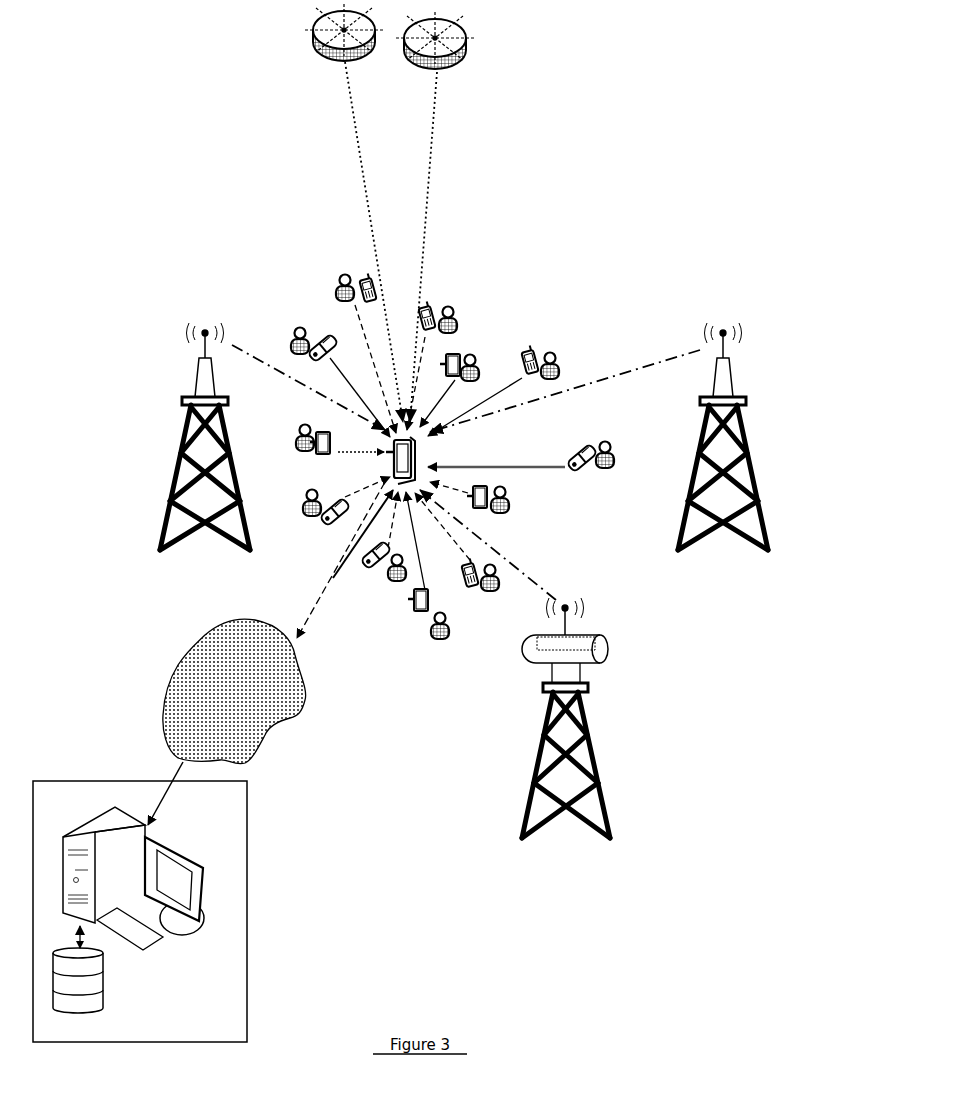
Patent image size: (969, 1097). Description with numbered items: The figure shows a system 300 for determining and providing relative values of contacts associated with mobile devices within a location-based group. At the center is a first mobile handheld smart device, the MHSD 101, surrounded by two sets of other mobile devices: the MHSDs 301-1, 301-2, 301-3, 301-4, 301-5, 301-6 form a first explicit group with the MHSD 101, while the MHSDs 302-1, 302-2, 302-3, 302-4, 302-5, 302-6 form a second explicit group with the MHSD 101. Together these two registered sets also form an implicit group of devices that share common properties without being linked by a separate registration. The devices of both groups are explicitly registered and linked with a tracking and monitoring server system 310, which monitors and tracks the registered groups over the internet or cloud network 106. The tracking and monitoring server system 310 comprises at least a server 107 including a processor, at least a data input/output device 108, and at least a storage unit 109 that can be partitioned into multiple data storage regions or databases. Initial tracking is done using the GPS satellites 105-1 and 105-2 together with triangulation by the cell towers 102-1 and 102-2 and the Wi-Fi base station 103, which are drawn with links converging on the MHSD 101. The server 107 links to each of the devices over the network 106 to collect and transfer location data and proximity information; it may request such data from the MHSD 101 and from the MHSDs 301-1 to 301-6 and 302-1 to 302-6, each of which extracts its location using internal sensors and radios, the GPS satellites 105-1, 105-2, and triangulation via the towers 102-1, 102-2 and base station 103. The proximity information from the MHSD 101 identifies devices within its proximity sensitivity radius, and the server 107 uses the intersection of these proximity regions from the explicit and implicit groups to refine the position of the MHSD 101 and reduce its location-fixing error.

The system 300 is at (652, 122).
The MHSD 101 is at (418, 460).
The cell tower 102-1 is at (728, 356).
The cell tower 102-2 is at (200, 356).
The Wi-Fi base station 103 is at (600, 665).
The GPS satellite 105-1 is at (332, 63).
The GPS satellite 105-2 is at (451, 68).
The network 106 is at (280, 730).
The server 107 is at (83, 836).
The data input/output device 108 is at (192, 897).
The storage unit 109 is at (103, 1006).
The tracking and monitoring server system 310 is at (248, 960).
The MHSD 301-1 is at (293, 333).
The MHSD 301-2 is at (466, 352).
The MHSD 301-3 is at (567, 352).
The MHSD 301-4 is at (604, 470).
The MHSD 301-5 is at (446, 640).
The MHSD 301-6 is at (296, 432).
The MHSD 302-1 is at (355, 272).
The MHSD 302-2 is at (445, 306).
The MHSD 302-3 is at (512, 512).
The MHSD 302-4 is at (494, 595).
The MHSD 302-5 is at (388, 583).
The MHSD 302-6 is at (306, 493).